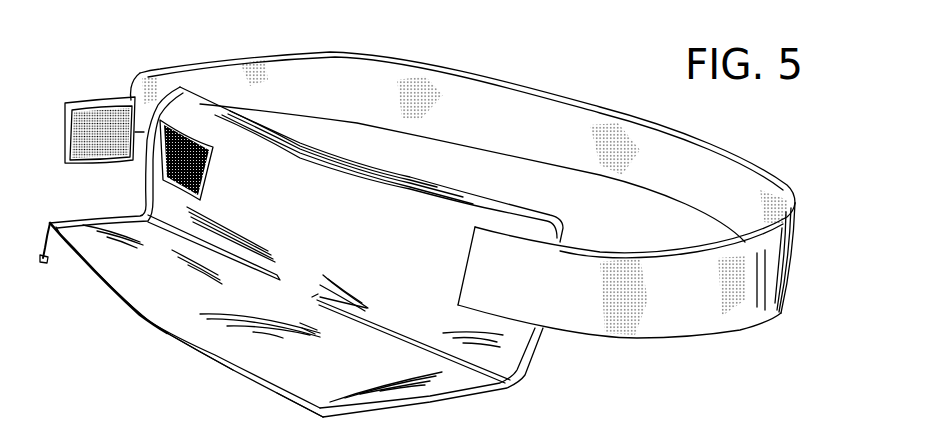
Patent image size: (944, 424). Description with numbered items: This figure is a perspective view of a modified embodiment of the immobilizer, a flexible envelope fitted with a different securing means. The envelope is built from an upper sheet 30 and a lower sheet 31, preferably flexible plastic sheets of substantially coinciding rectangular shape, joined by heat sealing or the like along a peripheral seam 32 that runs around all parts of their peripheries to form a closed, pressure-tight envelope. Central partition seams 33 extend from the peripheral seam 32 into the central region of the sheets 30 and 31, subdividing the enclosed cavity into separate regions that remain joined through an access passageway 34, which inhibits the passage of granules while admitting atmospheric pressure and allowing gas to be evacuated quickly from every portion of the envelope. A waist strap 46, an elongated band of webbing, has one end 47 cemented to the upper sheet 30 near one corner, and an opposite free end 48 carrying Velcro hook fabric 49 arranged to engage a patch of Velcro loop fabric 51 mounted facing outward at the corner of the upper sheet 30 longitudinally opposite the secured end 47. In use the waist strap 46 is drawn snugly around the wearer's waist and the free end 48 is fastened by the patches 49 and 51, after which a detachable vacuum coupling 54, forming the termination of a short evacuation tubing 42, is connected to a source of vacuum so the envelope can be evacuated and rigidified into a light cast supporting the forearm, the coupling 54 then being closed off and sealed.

The upper sheet 30 is at (160, 307).
The lower sheet 31 is at (283, 392).
The peripheral seam 32 is at (437, 195).
The central partition seams 33 is at (213, 240).
The access passageway 34 is at (297, 288).
The evacuation tubing 42 is at (62, 245).
The waist strap 46 is at (363, 78).
The secured end 47 is at (519, 286).
The free end 48 is at (127, 96).
The Velcro hook fabric 49 is at (105, 122).
The Velcro loop fabric patch 51 is at (163, 171).
The vacuum coupling 54 is at (105, 299).